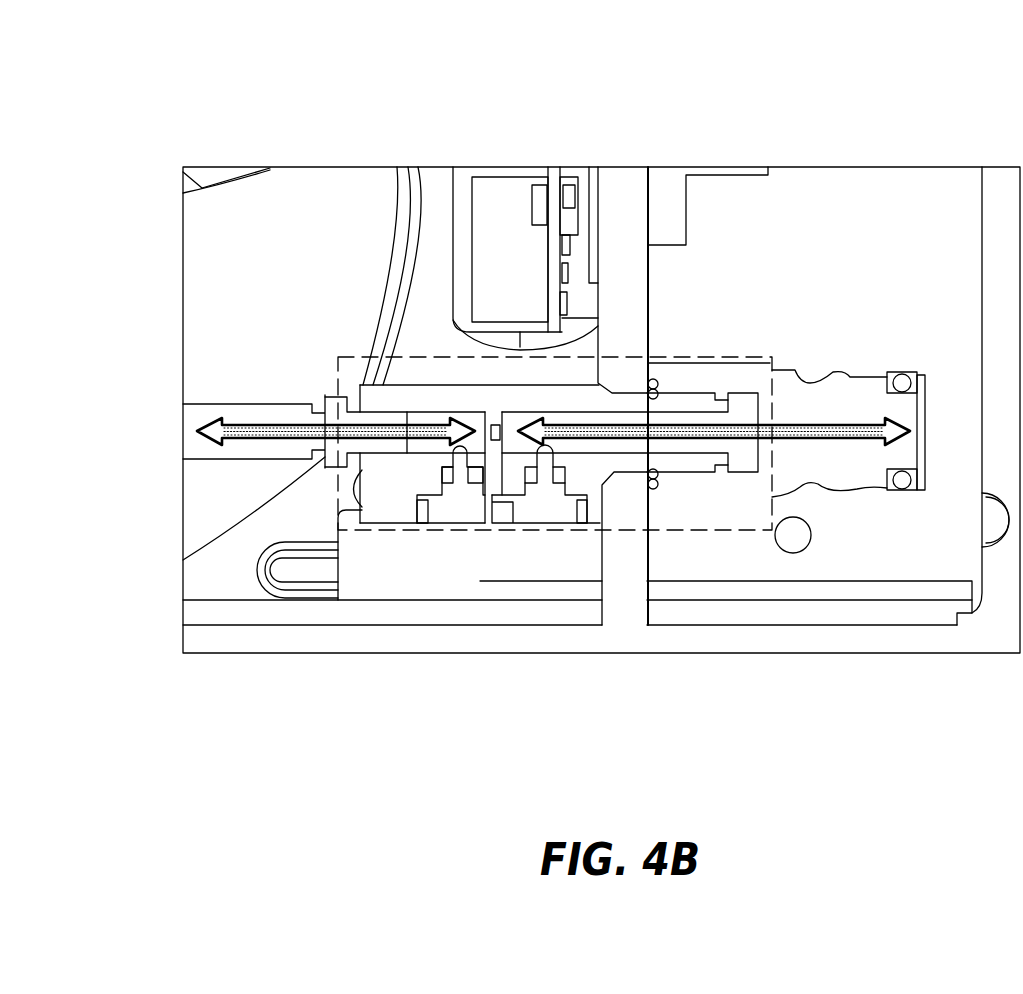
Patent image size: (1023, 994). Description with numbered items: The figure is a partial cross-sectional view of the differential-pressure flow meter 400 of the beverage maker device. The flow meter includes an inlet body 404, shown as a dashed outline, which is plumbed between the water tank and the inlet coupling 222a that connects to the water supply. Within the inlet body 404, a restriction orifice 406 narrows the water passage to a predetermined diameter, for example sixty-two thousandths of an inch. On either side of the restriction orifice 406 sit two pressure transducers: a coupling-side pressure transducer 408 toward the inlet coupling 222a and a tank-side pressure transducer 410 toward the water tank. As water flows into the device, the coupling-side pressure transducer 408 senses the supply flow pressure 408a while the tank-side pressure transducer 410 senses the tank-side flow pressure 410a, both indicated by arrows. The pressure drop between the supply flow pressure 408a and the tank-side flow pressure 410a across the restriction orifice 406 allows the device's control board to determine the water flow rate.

The differential-pressure flow meter 400 is at (160, 88).
The inlet body 404 is at (696, 357).
The restriction orifice 406 is at (490, 441).
The coupling-side pressure transducer 408 is at (557, 503).
The supply flow pressure 408a is at (882, 437).
The tank-side pressure transducer 410 is at (458, 503).
The tank-side flow pressure 410a is at (243, 437).
The inlet coupling 222a is at (852, 377).